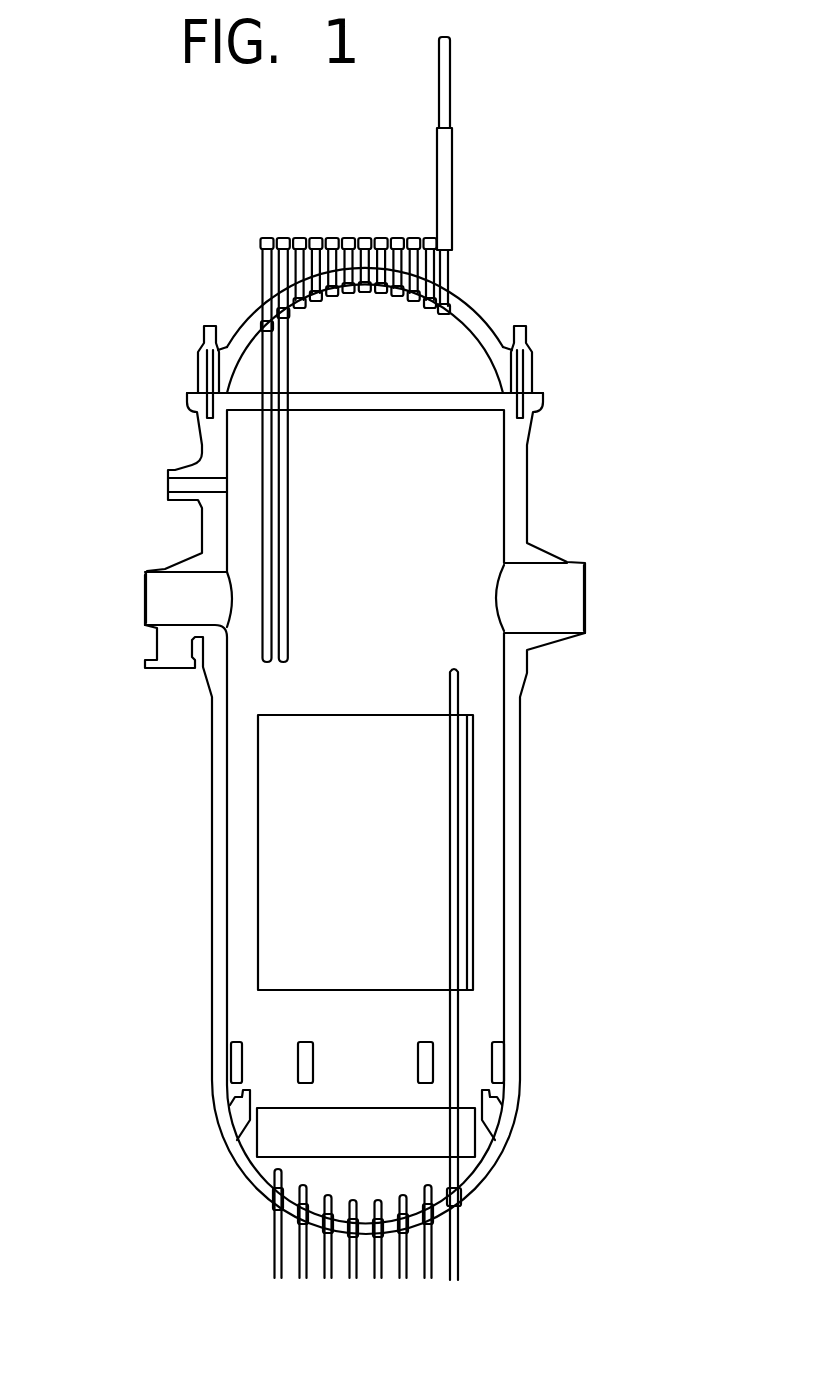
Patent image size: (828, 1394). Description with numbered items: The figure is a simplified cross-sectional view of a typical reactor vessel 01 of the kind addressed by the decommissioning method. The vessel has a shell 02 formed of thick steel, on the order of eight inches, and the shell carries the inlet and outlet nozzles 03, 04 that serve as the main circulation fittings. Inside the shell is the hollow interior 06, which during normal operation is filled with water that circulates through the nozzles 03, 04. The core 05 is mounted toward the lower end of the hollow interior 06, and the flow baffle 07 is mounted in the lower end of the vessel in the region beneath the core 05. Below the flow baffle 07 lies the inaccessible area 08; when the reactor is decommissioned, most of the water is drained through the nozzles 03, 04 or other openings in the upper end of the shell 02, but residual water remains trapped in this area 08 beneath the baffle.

The reactor vessel 01 is at (183, 195).
The shell 02 is at (528, 492).
The inlet nozzle 03 is at (162, 602).
The outlet nozzle 04 is at (558, 600).
The core 05 is at (382, 854).
The hollow interior 06 is at (382, 531).
The flow baffle 07 is at (297, 1108).
The inaccessible area 08 is at (343, 1180).